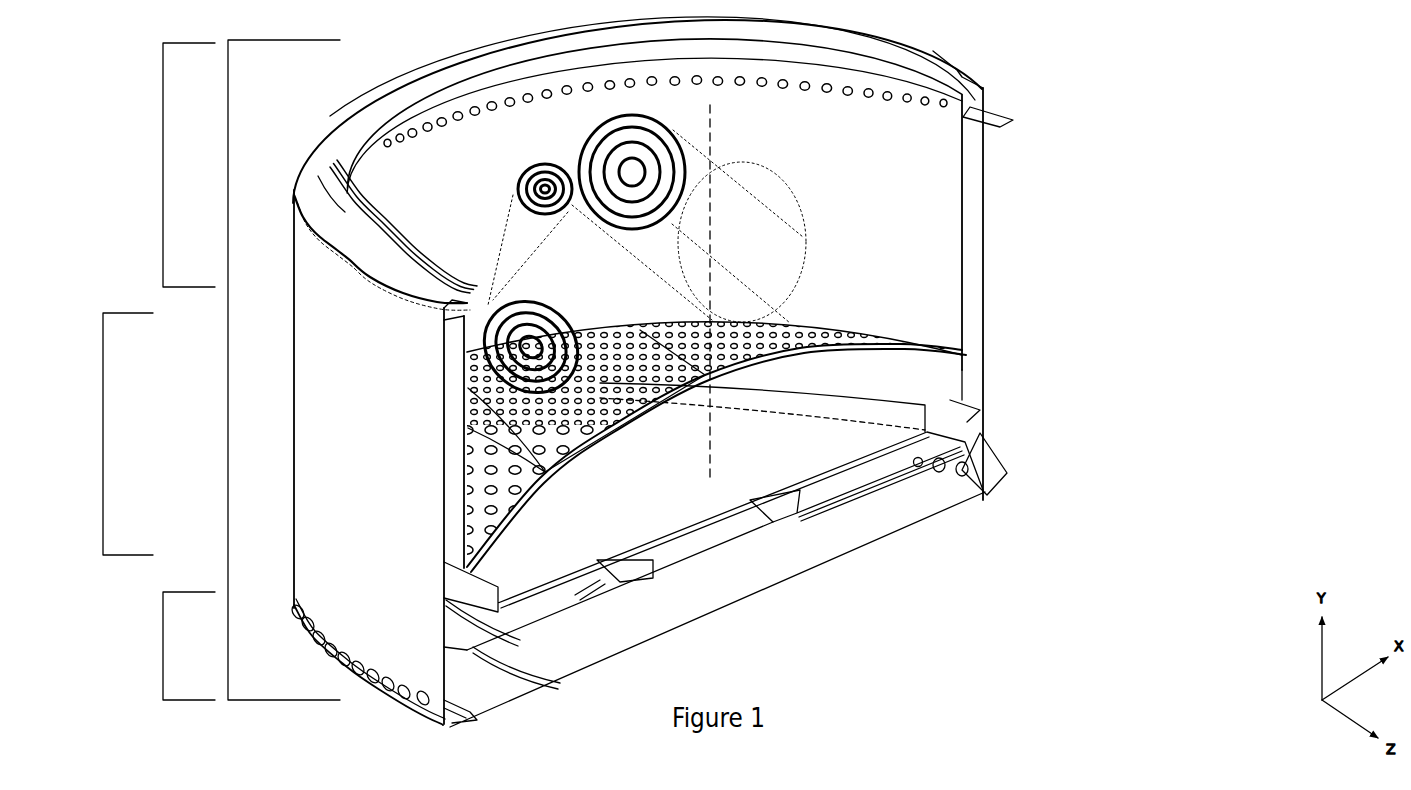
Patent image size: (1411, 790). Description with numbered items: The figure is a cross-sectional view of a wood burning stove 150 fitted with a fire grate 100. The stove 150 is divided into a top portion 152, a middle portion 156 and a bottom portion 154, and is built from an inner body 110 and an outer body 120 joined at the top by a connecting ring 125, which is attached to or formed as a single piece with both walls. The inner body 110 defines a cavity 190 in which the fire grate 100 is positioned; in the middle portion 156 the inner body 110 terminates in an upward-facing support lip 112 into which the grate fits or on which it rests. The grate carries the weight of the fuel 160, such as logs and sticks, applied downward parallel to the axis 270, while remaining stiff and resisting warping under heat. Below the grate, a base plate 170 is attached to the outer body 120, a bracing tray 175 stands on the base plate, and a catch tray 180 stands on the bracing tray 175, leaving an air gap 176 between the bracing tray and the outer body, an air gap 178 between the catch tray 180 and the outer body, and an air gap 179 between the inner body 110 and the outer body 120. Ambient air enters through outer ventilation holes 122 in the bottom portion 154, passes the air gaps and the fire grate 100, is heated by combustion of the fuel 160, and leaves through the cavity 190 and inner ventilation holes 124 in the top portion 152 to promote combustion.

The fire grate 100 is at (855, 318).
The inner body 110 is at (928, 243).
The support lip 112 is at (965, 358).
The outer body 120 is at (965, 392).
The outer ventilation holes 122 is at (943, 477).
The inner ventilation holes 124 is at (965, 96).
The connecting ring 125 is at (318, 172).
The wood burning stove 150 is at (228, 380).
The top portion 152 is at (163, 170).
The bottom portion 154 is at (163, 648).
The middle portion 156 is at (103, 440).
The fuel 160 is at (515, 188).
The base plate 170 is at (758, 573).
The bracing tray 175 is at (823, 490).
The air gap 176 is at (995, 482).
The air gap 178 is at (968, 417).
The air gap 179 is at (1010, 113).
The catch tray 180 is at (540, 581).
The cavity 190 is at (432, 153).
The axis 270 is at (707, 284).